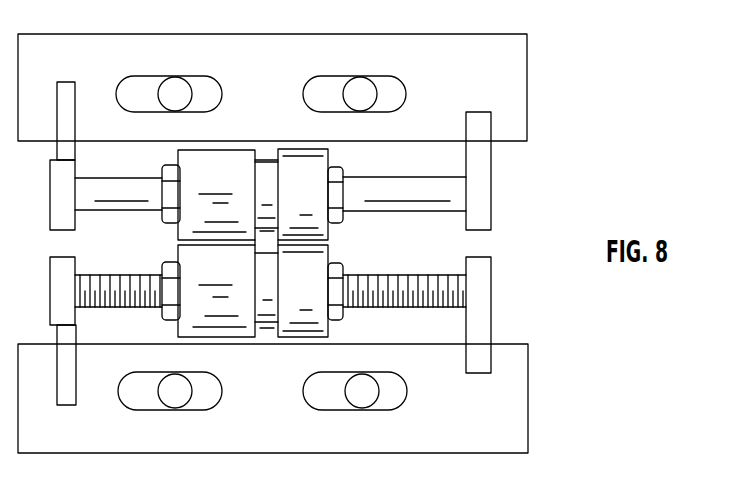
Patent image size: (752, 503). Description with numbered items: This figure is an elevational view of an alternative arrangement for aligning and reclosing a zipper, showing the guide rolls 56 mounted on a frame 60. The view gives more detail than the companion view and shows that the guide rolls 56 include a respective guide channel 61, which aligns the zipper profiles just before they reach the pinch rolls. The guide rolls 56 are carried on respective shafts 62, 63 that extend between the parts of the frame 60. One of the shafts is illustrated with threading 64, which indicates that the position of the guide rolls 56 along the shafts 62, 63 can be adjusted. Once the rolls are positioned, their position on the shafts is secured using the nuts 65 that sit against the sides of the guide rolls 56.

The guide rolls 56 is at (253, 243).
The frame 60 is at (510, 73).
The guide channel 61 is at (263, 178).
The shaft 62 is at (452, 190).
The shaft 63 is at (405, 287).
The threading 64 is at (133, 288).
The nuts 65 is at (343, 318).